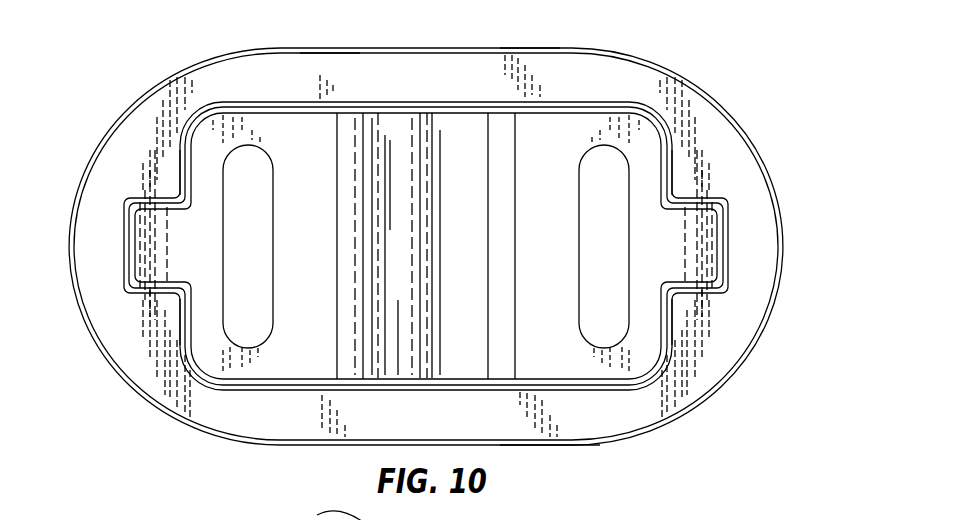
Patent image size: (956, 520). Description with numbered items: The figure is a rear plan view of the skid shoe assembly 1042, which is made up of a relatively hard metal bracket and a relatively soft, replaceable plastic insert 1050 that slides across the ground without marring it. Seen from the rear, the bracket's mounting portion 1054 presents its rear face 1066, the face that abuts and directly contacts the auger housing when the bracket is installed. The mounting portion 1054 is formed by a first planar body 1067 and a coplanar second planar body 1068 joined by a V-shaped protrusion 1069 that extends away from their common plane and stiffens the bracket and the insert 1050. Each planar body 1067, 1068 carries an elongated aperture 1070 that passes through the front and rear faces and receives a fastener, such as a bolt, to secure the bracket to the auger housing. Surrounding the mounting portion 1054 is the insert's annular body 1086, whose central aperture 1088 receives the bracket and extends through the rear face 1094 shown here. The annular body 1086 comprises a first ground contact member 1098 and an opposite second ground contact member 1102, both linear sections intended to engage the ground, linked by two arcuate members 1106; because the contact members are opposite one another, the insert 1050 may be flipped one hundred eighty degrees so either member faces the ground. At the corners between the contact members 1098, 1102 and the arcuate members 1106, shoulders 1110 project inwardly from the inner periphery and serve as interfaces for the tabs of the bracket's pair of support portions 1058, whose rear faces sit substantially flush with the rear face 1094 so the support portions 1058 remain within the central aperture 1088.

The skid shoe assembly 1042 is at (130, 70).
The replaceable insert 1050 is at (694, 84).
The mounting portion 1054 is at (297, 347).
The support portions 1058 is at (131, 228).
The rear face 1066 is at (328, 183).
The first planar body 1067 is at (220, 103).
The second planar body 1068 is at (590, 107).
The V-shaped protrusion 1069 is at (383, 110).
The elongated aperture 1070 is at (275, 275).
The annular body 1086 is at (320, 514).
The central aperture 1088 is at (498, 107).
The rear face 1094 is at (450, 86).
The first ground contact member 1098 is at (543, 49).
The second ground contact member 1102 is at (570, 445).
The arcuate members 1106 is at (70, 249).
The shoulders 1110 is at (182, 176).